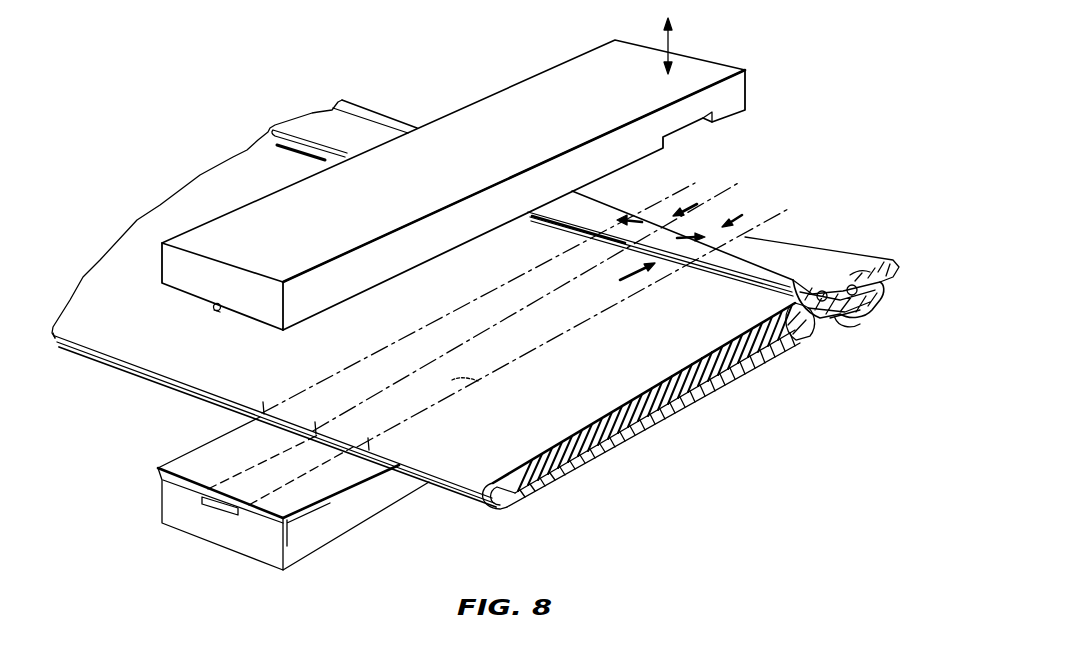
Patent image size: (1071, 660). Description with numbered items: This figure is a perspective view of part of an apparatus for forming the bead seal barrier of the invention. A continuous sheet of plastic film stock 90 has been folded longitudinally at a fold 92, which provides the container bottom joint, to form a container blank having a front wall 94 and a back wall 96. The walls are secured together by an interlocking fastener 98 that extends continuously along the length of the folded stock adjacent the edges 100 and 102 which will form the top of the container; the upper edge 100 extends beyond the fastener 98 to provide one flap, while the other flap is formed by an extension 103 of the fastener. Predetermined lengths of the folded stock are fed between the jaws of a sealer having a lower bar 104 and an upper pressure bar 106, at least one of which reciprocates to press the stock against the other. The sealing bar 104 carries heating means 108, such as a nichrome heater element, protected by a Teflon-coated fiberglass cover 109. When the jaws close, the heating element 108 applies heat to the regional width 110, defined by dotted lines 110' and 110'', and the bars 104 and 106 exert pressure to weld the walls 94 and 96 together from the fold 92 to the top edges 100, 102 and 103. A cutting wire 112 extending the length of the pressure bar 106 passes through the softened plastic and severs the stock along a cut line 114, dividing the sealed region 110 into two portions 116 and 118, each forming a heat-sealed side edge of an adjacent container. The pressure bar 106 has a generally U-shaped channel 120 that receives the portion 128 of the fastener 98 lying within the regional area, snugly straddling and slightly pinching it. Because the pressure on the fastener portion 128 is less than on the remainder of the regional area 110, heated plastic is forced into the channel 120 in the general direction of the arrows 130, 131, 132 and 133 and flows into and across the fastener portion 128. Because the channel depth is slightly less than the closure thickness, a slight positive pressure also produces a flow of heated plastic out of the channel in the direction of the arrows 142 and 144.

The continuous sheet of plastic film stock 90 is at (210, 195).
The fold 92 is at (497, 508).
The front wall 94 is at (588, 445).
The back wall 96 is at (650, 420).
The interlocking fastener 98 is at (800, 268).
The upper edge 100 is at (855, 272).
The edge 102 is at (788, 345).
The extension of the fastener 103 is at (862, 304).
The lower bar 104 is at (194, 449).
The upper pressure bar 106 is at (487, 125).
The heating means 108 is at (220, 508).
The Teflon-coated fiberglass cover 109 is at (300, 523).
The regional width 110 is at (452, 294).
The dotted line 110' is at (583, 340).
The dotted line 110'' is at (396, 324).
The cutting wire 112 is at (215, 311).
The cut line 114 is at (413, 370).
The heat-sealed side edge container portion 116 is at (350, 372).
The heat-sealed side edge container portion 118 is at (480, 382).
The U-shaped channel 120 is at (690, 136).
The fastener portion 128 is at (303, 127).
The arrow 130 is at (600, 251).
The arrow 131 is at (697, 204).
The arrow 132 is at (748, 203).
The arrow 133 is at (647, 277).
The arrow 142 is at (640, 222).
The arrow 144 is at (700, 243).